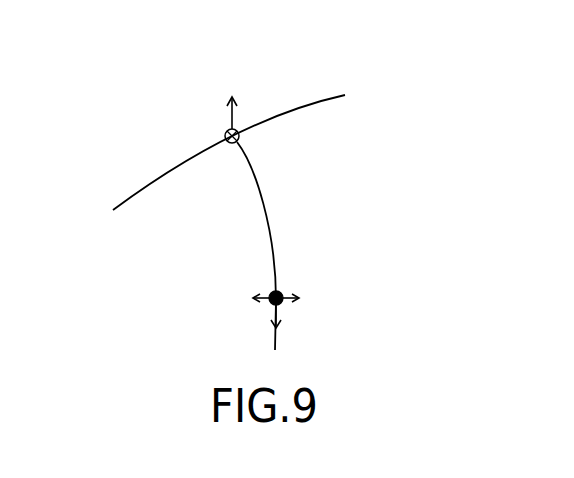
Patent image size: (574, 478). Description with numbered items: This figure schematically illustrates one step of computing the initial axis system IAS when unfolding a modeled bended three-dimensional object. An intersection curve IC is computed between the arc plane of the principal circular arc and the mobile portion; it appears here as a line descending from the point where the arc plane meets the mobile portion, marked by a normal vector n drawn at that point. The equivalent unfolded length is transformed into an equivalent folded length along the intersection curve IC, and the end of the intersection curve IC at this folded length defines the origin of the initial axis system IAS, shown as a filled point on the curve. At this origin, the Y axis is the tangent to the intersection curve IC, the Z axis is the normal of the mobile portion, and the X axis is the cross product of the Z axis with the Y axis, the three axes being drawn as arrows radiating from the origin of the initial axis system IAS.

The intersection curve IC is at (251, 246).
The normal vector n is at (236, 60).
The initial axis system IAS is at (298, 280).
The X axis X is at (250, 300).
The Y axis Y is at (286, 324).
The Z axis Z is at (300, 300).